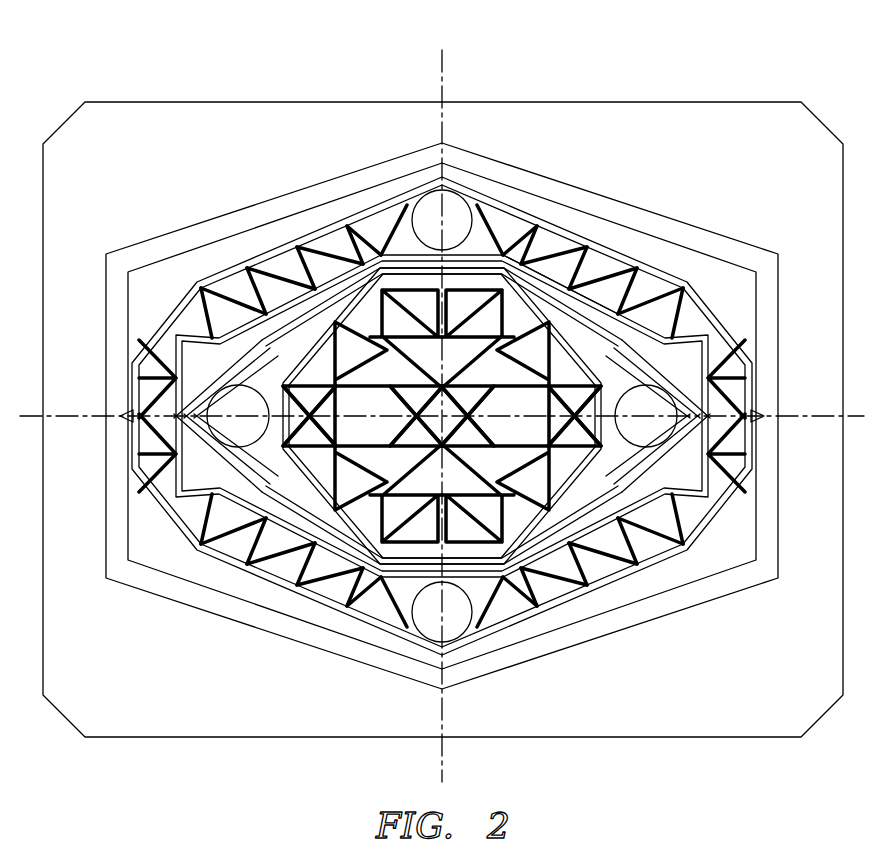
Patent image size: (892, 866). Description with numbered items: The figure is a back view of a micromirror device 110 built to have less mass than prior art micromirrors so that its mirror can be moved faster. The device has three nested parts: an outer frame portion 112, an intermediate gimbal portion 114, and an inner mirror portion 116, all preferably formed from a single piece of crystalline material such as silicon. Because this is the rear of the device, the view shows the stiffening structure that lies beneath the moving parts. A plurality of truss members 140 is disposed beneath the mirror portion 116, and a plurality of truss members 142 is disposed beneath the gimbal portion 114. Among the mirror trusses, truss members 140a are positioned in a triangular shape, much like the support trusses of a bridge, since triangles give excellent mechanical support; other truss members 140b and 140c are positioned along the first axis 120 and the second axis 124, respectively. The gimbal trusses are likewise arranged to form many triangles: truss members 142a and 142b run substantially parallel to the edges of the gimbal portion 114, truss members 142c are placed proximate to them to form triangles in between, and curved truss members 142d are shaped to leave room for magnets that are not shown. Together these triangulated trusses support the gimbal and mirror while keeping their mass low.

The micromirror device 110 is at (632, 70).
The frame portion 112 is at (724, 108).
The intermediate gimbal portion 114 is at (697, 508).
The inner mirror portion 116 is at (583, 495).
The first axis 120 is at (800, 416).
The second axis 124 is at (441, 72).
The truss members 140 is at (382, 532).
The truss members 140a is at (340, 343).
The truss members 140b is at (365, 492).
The truss members 140c is at (447, 350).
The truss members 142 is at (508, 620).
The truss members 142a is at (607, 256).
The truss members 142b is at (624, 296).
The truss members 142c is at (550, 237).
The curved truss members 142d is at (474, 220).